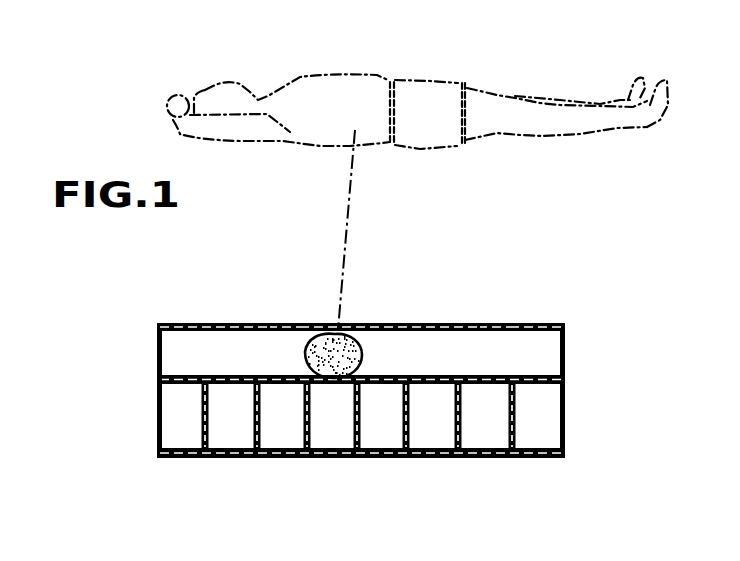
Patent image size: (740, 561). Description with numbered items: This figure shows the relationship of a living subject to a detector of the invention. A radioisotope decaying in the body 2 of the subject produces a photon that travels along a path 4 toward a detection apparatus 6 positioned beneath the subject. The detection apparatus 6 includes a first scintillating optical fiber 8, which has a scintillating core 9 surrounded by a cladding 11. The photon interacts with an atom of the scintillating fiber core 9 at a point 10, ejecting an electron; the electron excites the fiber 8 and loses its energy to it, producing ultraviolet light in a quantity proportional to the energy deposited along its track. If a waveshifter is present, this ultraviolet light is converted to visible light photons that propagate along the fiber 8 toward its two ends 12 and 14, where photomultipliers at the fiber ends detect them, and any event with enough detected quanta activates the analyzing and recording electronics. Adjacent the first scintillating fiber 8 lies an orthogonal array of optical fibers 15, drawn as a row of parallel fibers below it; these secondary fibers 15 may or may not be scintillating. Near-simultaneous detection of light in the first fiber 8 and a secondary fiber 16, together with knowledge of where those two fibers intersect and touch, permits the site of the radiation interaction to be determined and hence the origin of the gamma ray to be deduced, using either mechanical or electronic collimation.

The body 2 is at (380, 72).
The path 4 is at (349, 218).
The detection apparatus 6 is at (282, 310).
The first scintillating optical fiber 8 is at (242, 353).
The scintillating core 9 is at (193, 318).
The point 10 is at (362, 333).
The cladding 11 is at (494, 323).
The end 12 is at (157, 352).
The end 14 is at (373, 377).
The orthogonal array of optical fibers 15 is at (234, 469).
The secondary fiber 16 is at (333, 433).